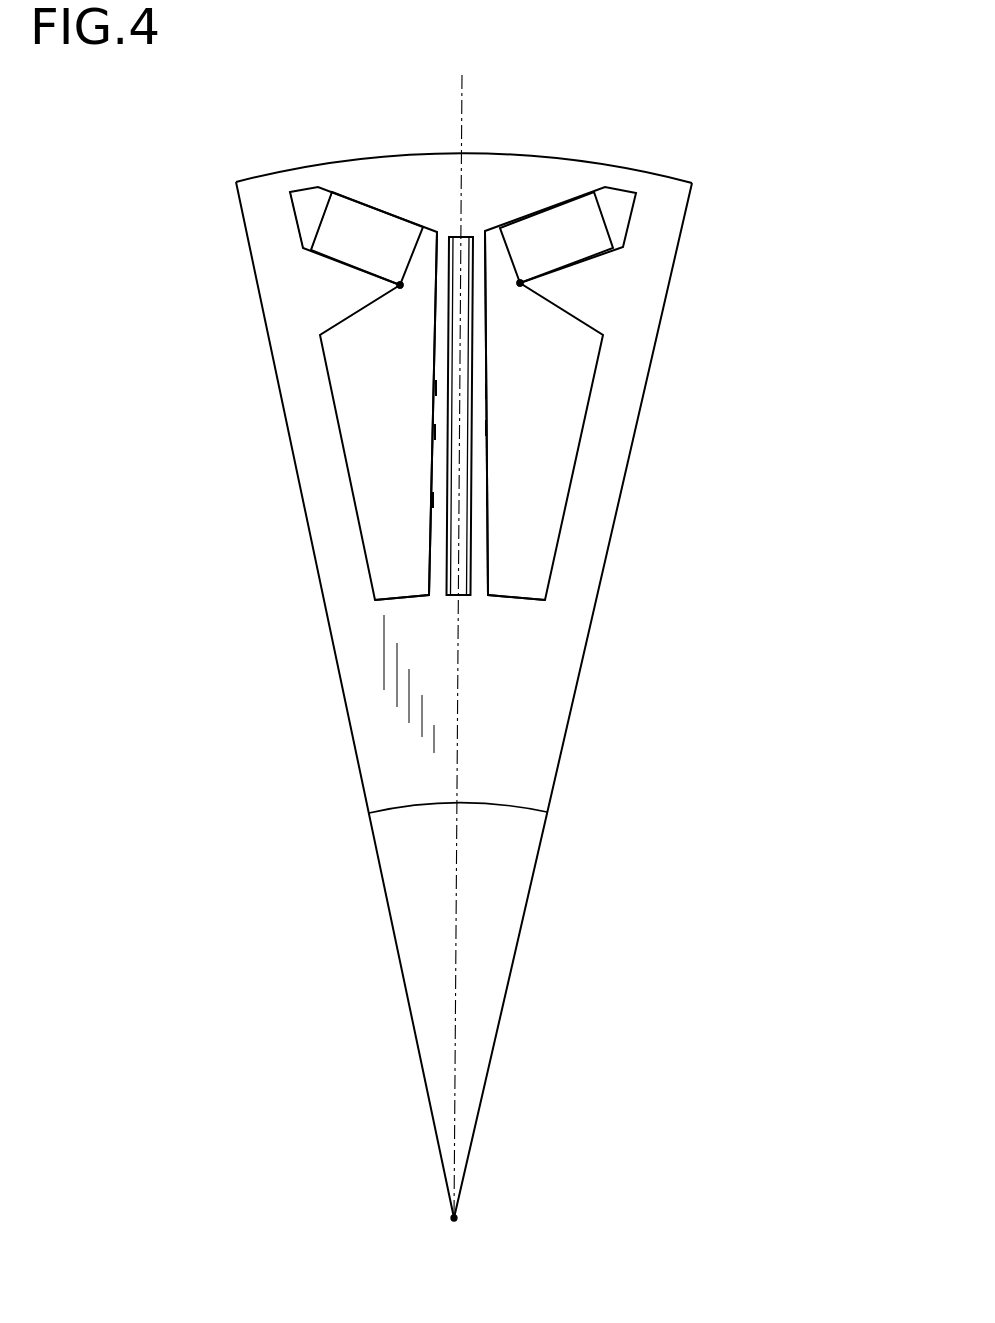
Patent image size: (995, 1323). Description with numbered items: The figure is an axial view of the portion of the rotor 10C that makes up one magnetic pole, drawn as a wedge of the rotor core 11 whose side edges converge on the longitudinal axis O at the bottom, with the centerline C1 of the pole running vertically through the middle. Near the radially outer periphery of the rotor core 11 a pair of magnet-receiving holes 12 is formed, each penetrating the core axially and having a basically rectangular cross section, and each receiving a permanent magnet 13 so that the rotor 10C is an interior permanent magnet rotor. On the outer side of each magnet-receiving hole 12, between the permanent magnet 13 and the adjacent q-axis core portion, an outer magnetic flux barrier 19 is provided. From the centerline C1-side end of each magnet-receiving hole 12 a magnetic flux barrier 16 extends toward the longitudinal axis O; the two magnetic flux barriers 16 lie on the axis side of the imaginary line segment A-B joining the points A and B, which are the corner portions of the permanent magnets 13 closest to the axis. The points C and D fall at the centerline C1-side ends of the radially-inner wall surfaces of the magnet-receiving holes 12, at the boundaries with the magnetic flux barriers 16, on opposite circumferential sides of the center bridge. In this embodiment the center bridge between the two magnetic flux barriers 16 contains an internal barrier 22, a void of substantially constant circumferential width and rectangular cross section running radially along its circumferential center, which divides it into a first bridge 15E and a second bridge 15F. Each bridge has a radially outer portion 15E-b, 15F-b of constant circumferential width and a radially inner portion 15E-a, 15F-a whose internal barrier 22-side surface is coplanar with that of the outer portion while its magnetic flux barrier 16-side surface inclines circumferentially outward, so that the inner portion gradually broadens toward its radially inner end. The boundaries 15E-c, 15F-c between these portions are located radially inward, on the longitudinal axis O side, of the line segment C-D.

The rotor 10C is at (639, 167).
The rotor core 11 is at (363, 687).
The magnet-receiving hole 12 is at (341, 257).
The permanent magnet 13 is at (358, 217).
The outer magnetic flux barrier 19 is at (295, 214).
The internal barrier 22 is at (468, 362).
The first bridge 15E is at (170, 382).
The radially inner portion of first bridge 15E-a is at (438, 500).
The radially outer portion of first bridge 15E-b is at (438, 388).
The boundary of first bridge 15E-c is at (436, 432).
The second bridge 15F is at (760, 378).
The radially inner portion of second bridge 15F-a is at (482, 498).
The radially outer portion of second bridge 15F-b is at (478, 391).
The boundary of second bridge 15F-c is at (485, 428).
The magnetic flux barrier 16 is at (407, 562).
The point A is at (400, 284).
The point B is at (520, 282).
The point C is at (401, 287).
The point D is at (519, 286).
The longitudinal axis O is at (456, 1236).
The centerline C1 is at (462, 631).